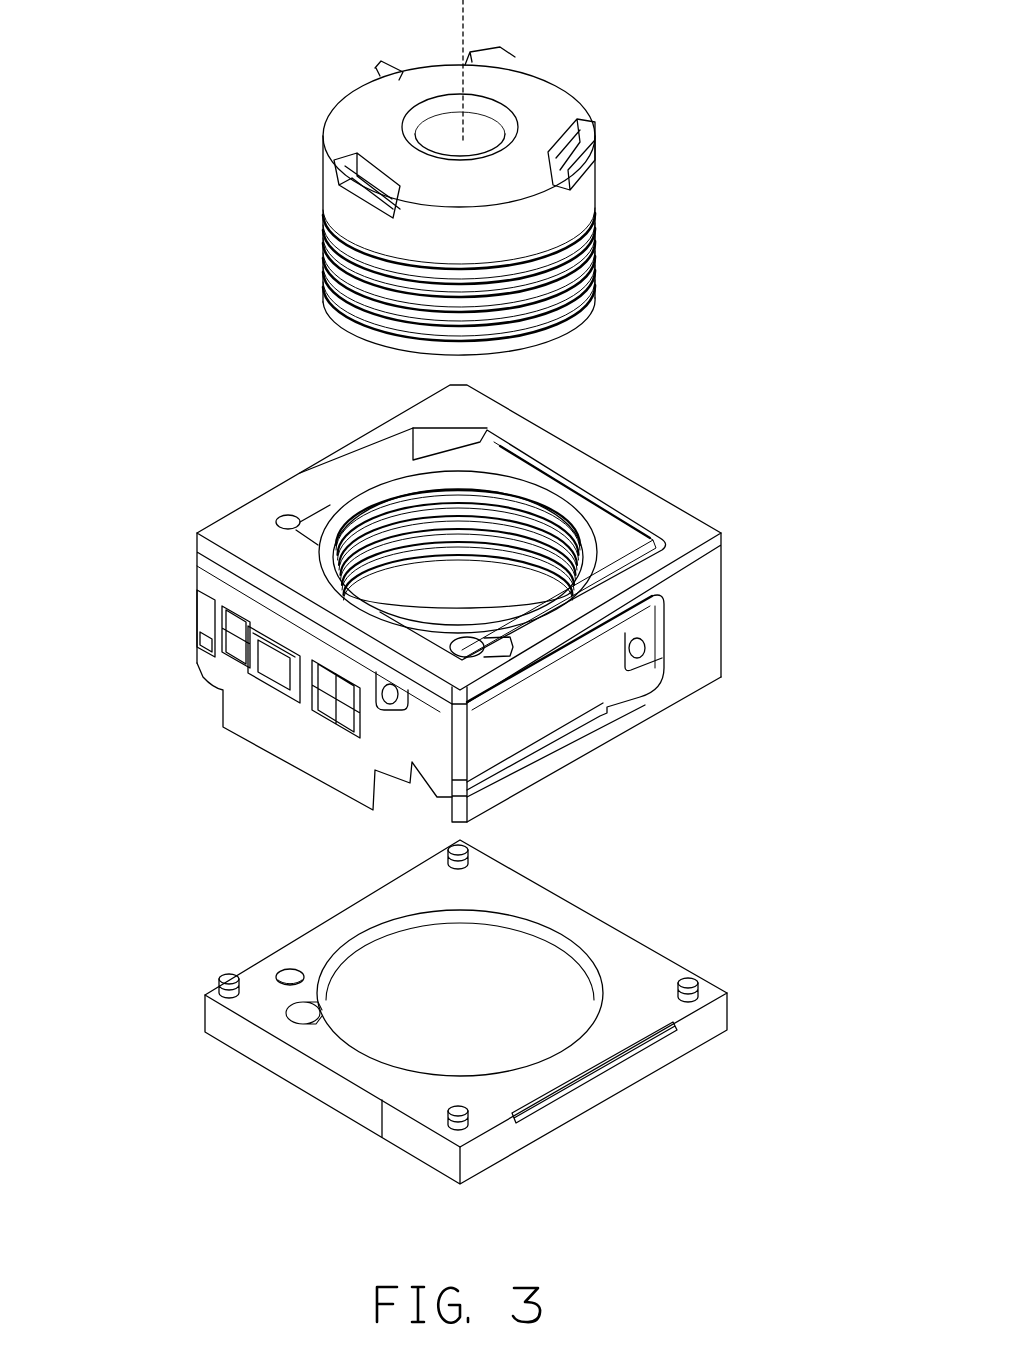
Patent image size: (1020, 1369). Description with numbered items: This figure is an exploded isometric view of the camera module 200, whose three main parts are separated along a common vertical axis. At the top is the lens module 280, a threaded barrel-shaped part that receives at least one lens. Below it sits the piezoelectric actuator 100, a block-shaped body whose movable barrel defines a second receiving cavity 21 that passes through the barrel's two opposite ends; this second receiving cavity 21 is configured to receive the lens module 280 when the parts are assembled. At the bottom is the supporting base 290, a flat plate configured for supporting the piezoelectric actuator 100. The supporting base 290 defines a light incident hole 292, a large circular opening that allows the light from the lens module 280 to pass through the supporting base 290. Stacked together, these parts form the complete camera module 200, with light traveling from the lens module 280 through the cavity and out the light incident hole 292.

The camera module 200 is at (178, 72).
The lens module 280 is at (537, 113).
The piezoelectric actuator 100 is at (203, 493).
The second receiving cavity 21 is at (418, 590).
The supporting base 290 is at (628, 972).
The light incident hole 292 is at (385, 1003).